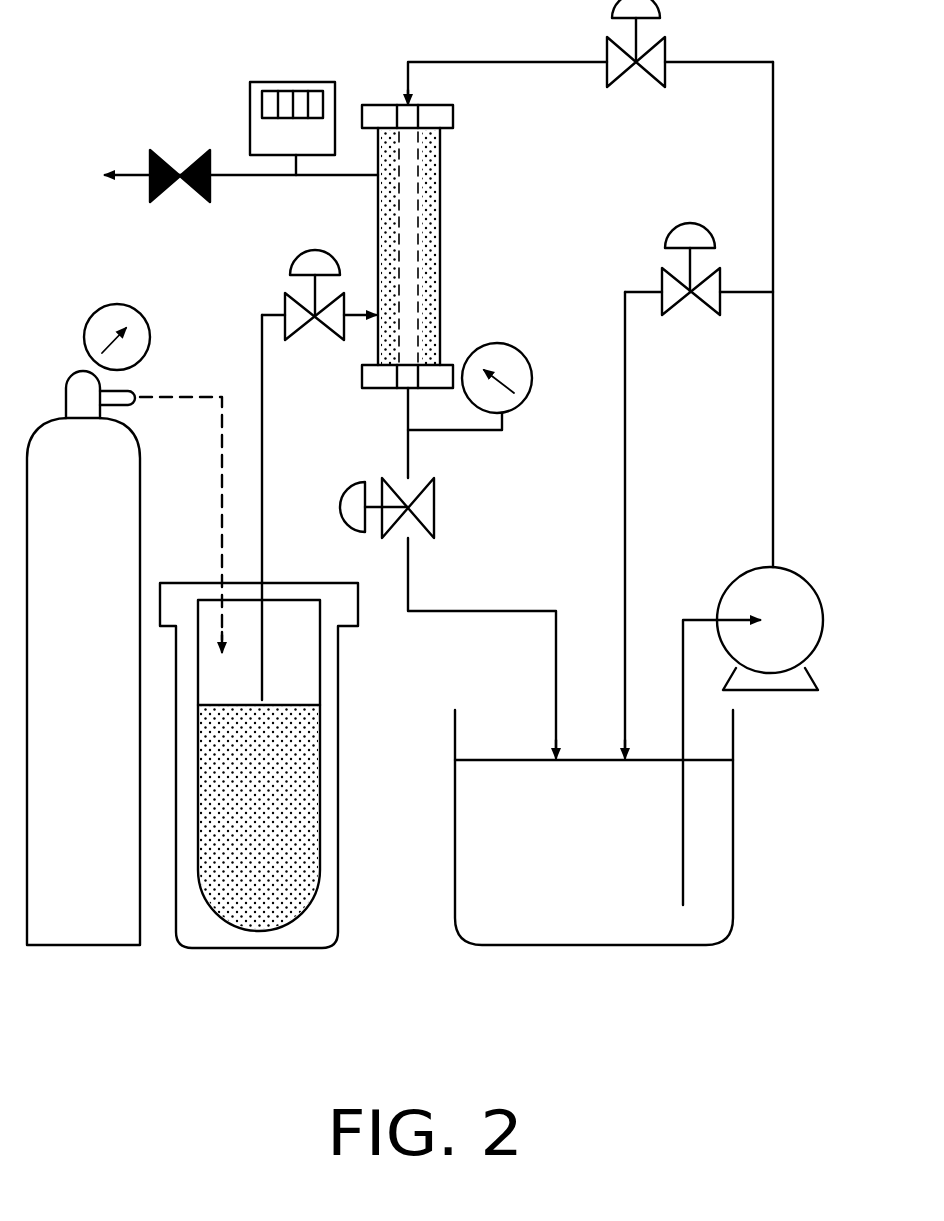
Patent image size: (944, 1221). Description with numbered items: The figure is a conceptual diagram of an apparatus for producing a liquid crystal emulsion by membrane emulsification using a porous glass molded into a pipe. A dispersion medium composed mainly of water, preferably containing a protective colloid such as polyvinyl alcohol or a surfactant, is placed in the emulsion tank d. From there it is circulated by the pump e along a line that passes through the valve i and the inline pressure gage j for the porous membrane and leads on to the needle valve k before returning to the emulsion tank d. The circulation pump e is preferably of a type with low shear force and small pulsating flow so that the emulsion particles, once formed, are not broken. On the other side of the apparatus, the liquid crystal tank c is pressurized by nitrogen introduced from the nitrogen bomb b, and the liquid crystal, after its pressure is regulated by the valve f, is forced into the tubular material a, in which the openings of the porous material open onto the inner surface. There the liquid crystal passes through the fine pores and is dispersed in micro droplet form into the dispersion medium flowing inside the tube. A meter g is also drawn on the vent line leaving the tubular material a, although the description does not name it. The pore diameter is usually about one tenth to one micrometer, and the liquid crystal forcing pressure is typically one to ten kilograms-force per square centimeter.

The tubular material a is at (423, 246).
The nitrogen bomb b is at (88, 624).
The liquid crystal tank c is at (259, 765).
The emulsion tank d is at (594, 827).
The pump e is at (753, 720).
The valve f is at (312, 295).
The flow meter g is at (292, 104).
The valve i is at (699, 251).
The inline pressure gage j is at (636, 59).
The needle valve k is at (381, 488).